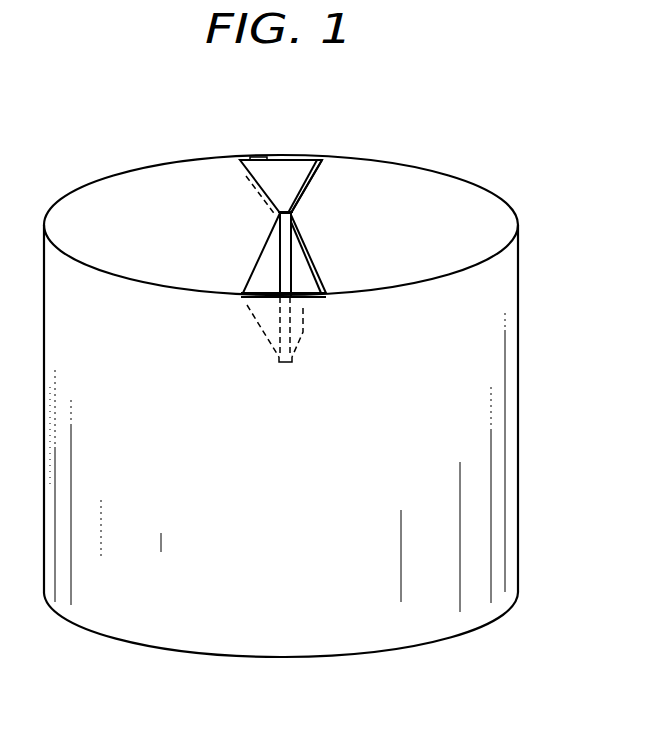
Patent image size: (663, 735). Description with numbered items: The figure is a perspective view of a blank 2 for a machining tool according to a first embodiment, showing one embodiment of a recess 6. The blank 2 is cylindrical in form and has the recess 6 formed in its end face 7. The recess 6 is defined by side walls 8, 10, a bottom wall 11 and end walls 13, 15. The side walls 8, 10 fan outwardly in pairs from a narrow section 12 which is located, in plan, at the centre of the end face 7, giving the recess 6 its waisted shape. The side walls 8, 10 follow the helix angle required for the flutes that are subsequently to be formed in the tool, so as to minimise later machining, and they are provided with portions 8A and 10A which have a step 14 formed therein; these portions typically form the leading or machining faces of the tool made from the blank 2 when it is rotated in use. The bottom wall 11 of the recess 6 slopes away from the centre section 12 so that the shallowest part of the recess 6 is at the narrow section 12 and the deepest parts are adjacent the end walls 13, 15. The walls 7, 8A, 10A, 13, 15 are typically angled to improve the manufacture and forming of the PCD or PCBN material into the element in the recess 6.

The blank 2 is at (478, 537).
The recess 6 is at (290, 173).
The end face 7 is at (443, 195).
The side wall 8 is at (245, 182).
The side wall portion 8A is at (250, 158).
The side wall 10 is at (310, 197).
The side wall portion 10A is at (320, 306).
The bottom wall 11 is at (283, 272).
The narrow section 12 is at (278, 215).
The end wall 13 is at (258, 158).
The step 14 is at (302, 332).
The end wall 15 is at (247, 304).